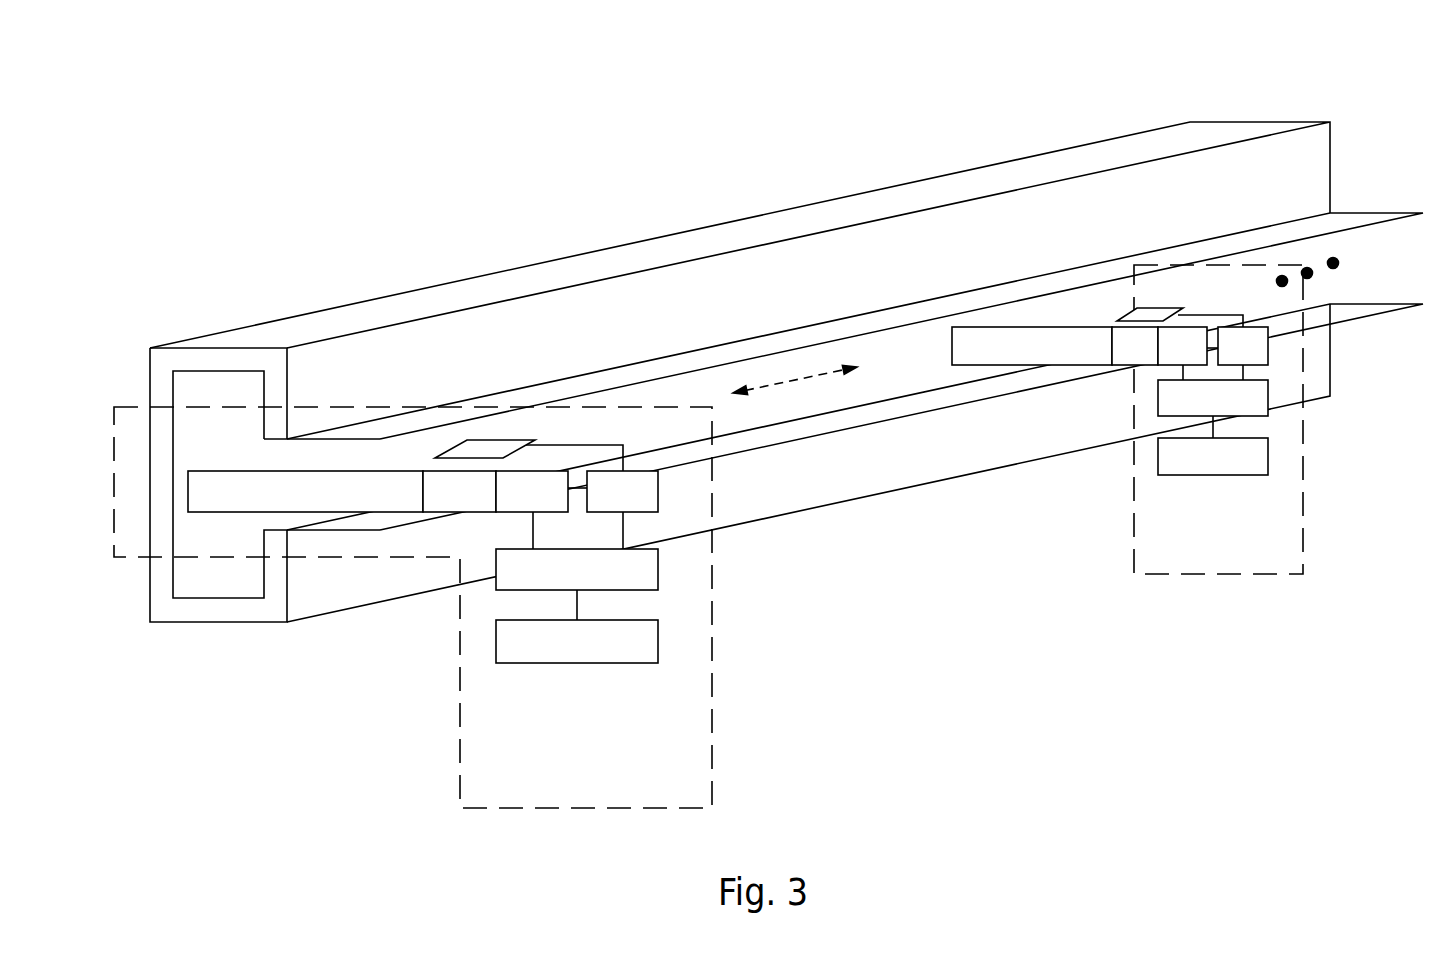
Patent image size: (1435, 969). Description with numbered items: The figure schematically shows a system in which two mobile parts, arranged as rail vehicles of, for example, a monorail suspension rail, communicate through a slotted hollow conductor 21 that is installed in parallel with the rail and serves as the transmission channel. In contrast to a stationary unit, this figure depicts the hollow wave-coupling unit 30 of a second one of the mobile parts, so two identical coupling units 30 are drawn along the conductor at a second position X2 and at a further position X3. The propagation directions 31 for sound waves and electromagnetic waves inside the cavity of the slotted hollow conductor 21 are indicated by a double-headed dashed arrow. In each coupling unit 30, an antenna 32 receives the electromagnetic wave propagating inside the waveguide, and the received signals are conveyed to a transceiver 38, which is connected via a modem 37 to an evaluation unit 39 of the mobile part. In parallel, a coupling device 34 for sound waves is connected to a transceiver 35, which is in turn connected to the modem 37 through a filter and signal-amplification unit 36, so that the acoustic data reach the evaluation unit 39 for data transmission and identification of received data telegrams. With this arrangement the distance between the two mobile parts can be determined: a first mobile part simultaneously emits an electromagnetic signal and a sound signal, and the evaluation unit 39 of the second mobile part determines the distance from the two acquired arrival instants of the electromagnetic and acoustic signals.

The slotted hollow conductor 21 is at (852, 436).
The coupling unit 30 is at (603, 773).
The propagation directions for sound waves and electromagnetic waves 31 is at (786, 367).
The antenna 32 is at (839, 370).
The coupling device for sound waves 34 is at (326, 510).
The transceiver 35 is at (475, 510).
The filter and signal-amplification unit 36 is at (546, 510).
The modem for a data transmission and identification of received data telegrams 37 is at (595, 587).
The transceiver 38 is at (639, 510).
The evaluation unit 39 is at (595, 661).
The second position X2 is at (330, 320).
The third position X3 is at (982, 155).